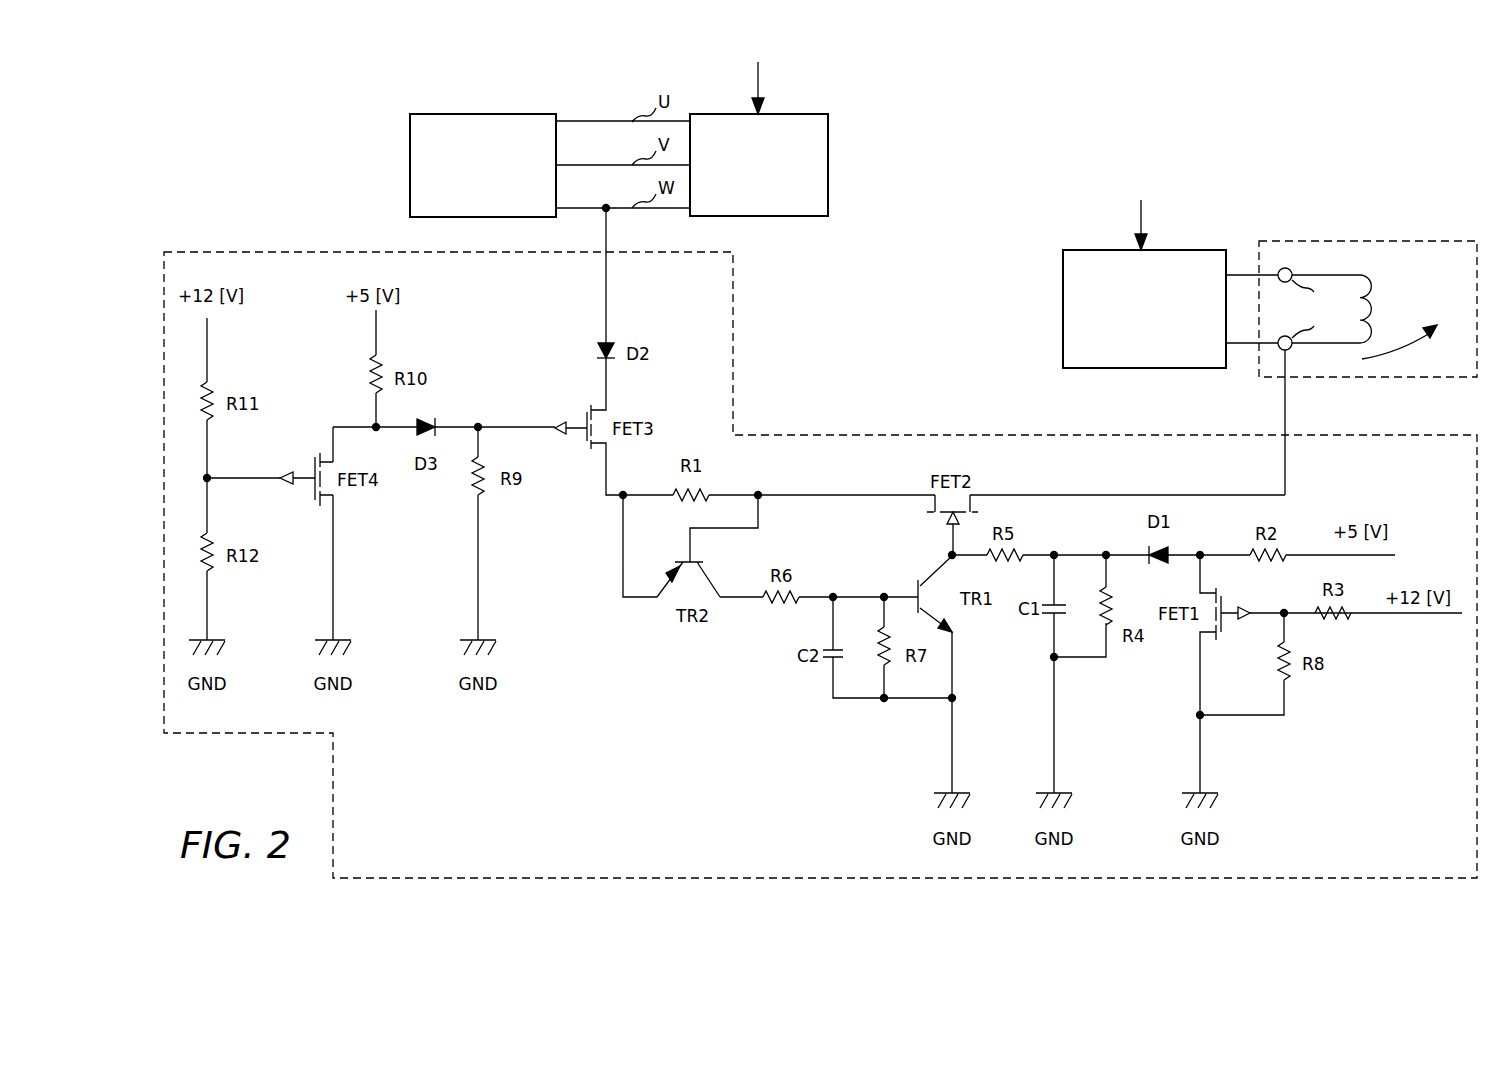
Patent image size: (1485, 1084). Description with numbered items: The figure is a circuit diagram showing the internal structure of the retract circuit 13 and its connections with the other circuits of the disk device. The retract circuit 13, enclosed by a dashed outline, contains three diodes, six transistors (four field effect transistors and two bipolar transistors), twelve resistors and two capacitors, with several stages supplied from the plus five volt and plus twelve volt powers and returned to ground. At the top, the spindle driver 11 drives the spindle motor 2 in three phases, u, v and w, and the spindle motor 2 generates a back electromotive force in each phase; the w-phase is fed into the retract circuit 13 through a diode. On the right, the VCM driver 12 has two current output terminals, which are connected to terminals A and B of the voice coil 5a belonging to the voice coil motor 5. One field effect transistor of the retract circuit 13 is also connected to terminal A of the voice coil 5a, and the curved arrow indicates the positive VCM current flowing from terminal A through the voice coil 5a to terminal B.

The spindle motor 2 is at (437, 114).
The spindle driver 11 is at (830, 138).
The VCM driver 12 is at (1063, 283).
The voice coil motor 5 is at (1351, 279).
The voice coil 5a is at (1342, 275).
The retract circuit 13 is at (870, 435).